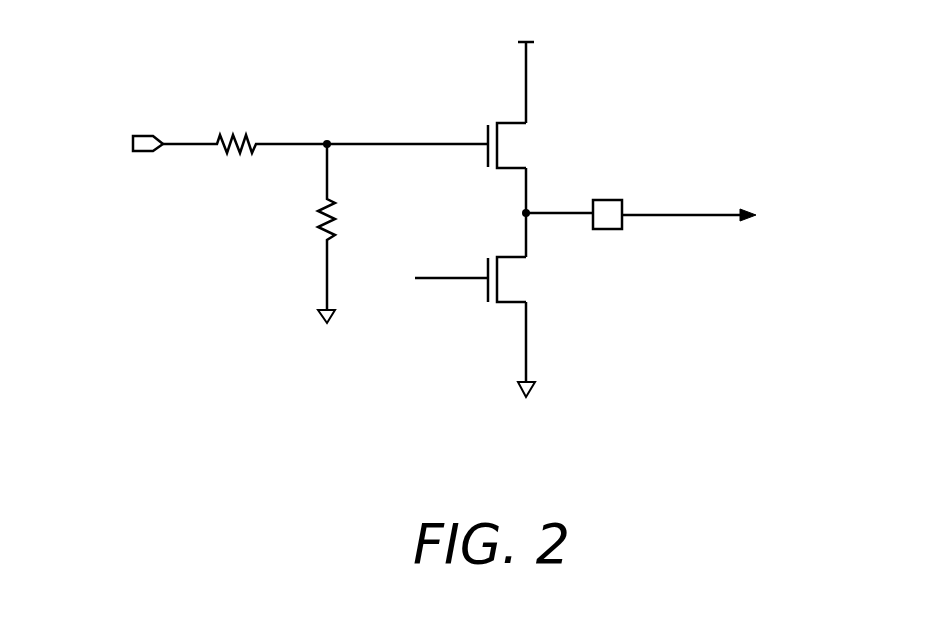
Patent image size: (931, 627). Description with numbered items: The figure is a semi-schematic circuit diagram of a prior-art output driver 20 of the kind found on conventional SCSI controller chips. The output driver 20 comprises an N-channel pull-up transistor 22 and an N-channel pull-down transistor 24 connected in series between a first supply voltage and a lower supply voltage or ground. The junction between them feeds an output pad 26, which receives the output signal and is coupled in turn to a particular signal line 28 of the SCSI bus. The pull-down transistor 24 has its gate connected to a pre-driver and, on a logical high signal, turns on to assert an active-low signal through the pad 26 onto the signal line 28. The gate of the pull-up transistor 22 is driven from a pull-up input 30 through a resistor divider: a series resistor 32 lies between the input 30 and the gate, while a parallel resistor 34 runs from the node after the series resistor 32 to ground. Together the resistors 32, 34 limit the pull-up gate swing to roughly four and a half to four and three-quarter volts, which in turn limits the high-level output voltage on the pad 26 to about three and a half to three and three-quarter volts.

The output driver 20 is at (716, 67).
The N-channel pull-up transistor 22 is at (512, 145).
The N-channel pull-down transistor 24 is at (523, 280).
The output pad 26 is at (608, 212).
The signal line 28 is at (728, 210).
The pull-up input 30 is at (150, 140).
The series resistor 32 is at (242, 137).
The parallel resistor 34 is at (318, 232).